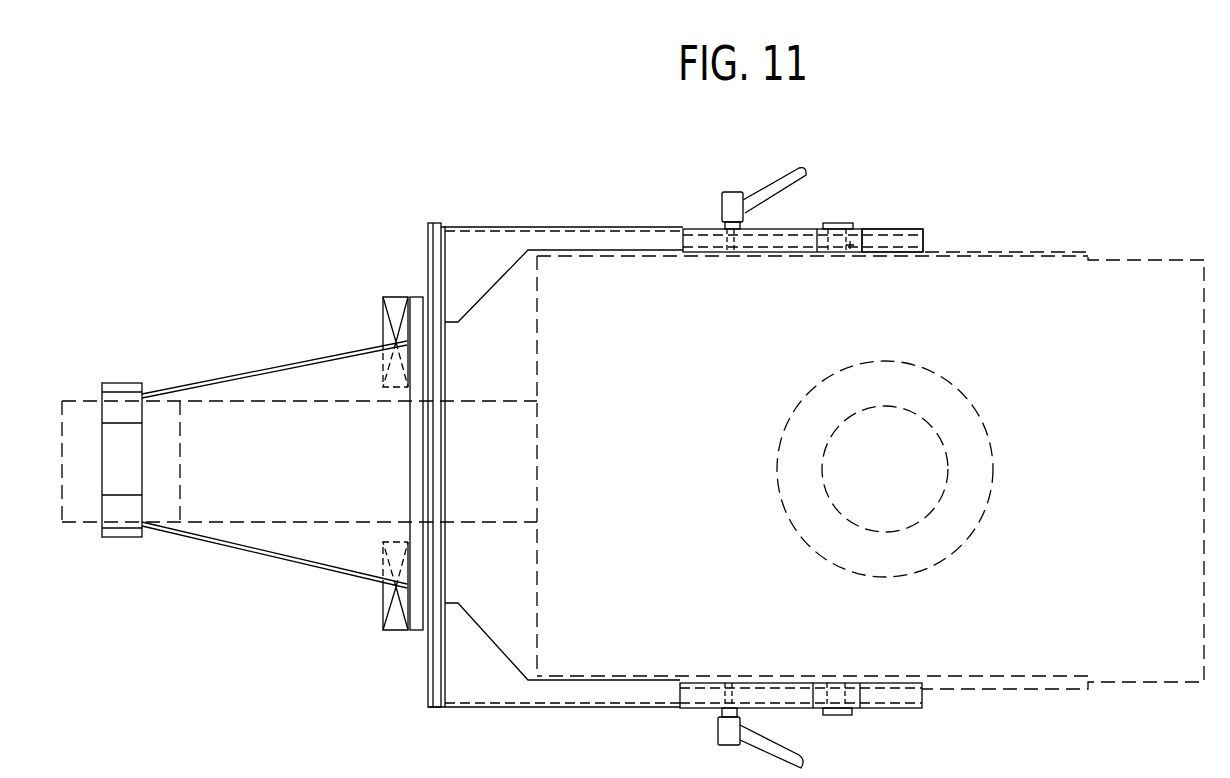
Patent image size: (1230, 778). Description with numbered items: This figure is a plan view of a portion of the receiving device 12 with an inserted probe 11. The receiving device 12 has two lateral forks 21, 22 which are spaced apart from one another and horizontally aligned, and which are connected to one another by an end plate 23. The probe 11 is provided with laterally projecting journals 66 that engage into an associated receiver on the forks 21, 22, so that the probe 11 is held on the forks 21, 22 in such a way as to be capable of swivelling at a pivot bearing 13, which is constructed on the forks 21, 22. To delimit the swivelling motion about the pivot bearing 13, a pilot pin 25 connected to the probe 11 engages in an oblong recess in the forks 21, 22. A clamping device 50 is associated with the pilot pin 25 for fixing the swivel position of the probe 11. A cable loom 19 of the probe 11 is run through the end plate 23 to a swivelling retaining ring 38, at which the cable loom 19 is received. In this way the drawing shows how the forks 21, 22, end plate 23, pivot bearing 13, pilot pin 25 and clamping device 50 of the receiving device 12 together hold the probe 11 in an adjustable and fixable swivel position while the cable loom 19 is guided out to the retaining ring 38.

The probe 11 is at (1135, 300).
The receiving device 12 is at (548, 214).
The pivot bearing 13 is at (851, 223).
The cable loom 19 is at (228, 507).
The fork 21 is at (597, 692).
The fork 22 is at (612, 240).
The end plate 23 is at (430, 677).
The pilot pin 25 is at (720, 260).
The retaining ring 38 is at (132, 383).
The clamping device 50 is at (755, 197).
The journal 66 is at (870, 231).